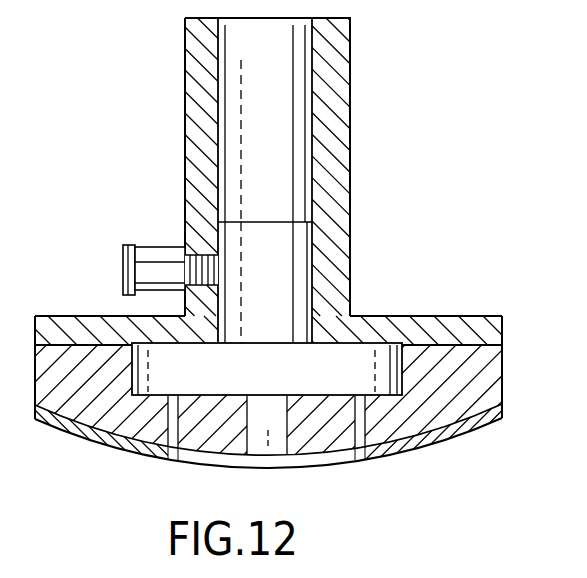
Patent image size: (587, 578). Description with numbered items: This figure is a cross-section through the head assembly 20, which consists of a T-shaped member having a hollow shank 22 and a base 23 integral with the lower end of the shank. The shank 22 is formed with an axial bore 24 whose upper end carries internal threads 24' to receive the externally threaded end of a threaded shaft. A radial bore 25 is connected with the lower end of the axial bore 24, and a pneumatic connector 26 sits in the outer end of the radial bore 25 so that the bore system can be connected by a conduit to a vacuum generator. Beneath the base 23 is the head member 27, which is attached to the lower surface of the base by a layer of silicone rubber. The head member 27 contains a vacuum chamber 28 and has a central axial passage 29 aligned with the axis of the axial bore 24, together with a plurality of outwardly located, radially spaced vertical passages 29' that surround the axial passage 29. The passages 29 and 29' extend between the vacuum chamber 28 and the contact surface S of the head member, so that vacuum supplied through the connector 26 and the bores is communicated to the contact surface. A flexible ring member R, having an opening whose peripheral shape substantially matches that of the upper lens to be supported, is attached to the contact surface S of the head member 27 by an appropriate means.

The head assembly 20 is at (358, 96).
The hollow shank 22 is at (185, 83).
The base 23 is at (430, 327).
The axial bore 24 is at (320, 282).
The internal threads 24' is at (338, 123).
The radial bore 25 is at (216, 274).
The pneumatic connector 26 is at (152, 245).
The head member 27 is at (486, 383).
The vacuum chamber 28 is at (352, 385).
The central axial passage 29 is at (247, 456).
The vertical passages 29' is at (385, 455).
The flexible ring member R is at (64, 432).
The contact surface S is at (178, 460).